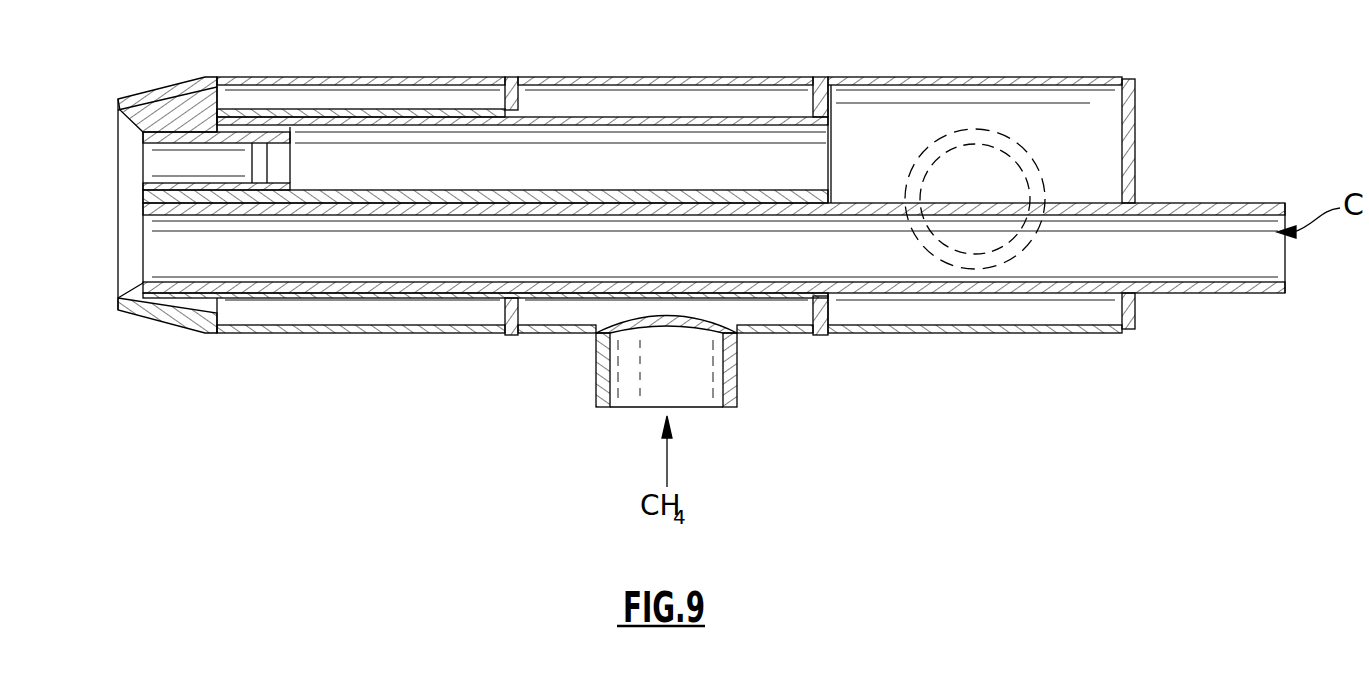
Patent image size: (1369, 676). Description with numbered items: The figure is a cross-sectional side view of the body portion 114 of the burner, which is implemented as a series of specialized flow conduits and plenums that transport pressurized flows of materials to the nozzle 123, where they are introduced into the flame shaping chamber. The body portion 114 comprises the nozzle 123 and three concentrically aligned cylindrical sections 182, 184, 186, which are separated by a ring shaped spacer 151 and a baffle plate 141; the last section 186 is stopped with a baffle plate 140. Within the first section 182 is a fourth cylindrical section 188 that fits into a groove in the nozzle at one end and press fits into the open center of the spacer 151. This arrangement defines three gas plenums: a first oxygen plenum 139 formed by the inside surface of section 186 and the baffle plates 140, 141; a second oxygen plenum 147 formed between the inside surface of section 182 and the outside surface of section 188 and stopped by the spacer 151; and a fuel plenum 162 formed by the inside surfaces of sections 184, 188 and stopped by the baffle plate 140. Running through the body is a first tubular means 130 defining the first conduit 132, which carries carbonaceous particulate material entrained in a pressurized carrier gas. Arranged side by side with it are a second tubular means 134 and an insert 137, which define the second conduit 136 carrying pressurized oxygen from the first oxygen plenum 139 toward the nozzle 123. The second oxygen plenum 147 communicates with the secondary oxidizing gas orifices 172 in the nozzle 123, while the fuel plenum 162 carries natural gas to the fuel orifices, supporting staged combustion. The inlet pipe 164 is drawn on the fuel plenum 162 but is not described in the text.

The gas orifices 172 is at (160, 92).
The nozzle 123 is at (180, 342).
The second conduit 136 is at (155, 150).
The first conduit 132 is at (155, 237).
The first tubular means 130 is at (568, 283).
The second oxygen plenum 147 is at (385, 93).
The first cylindrical section 182 is at (310, 93).
The fourth cylindrical section 188 is at (272, 305).
The insert 137 is at (270, 112).
The second tubular means 134 is at (520, 110).
The ring shaped spacer 151 is at (512, 85).
The fuel plenum 162 is at (670, 103).
The baffle plate 141 is at (820, 83).
The second cylindrical section 184 is at (785, 73).
The third cylindrical section 186 is at (1052, 73).
The first oxygen plenum 139 is at (890, 100).
The baffle plate 140 is at (1135, 110).
The gas inlet pipe 164 is at (737, 368).
The body portion 114 is at (408, 352).